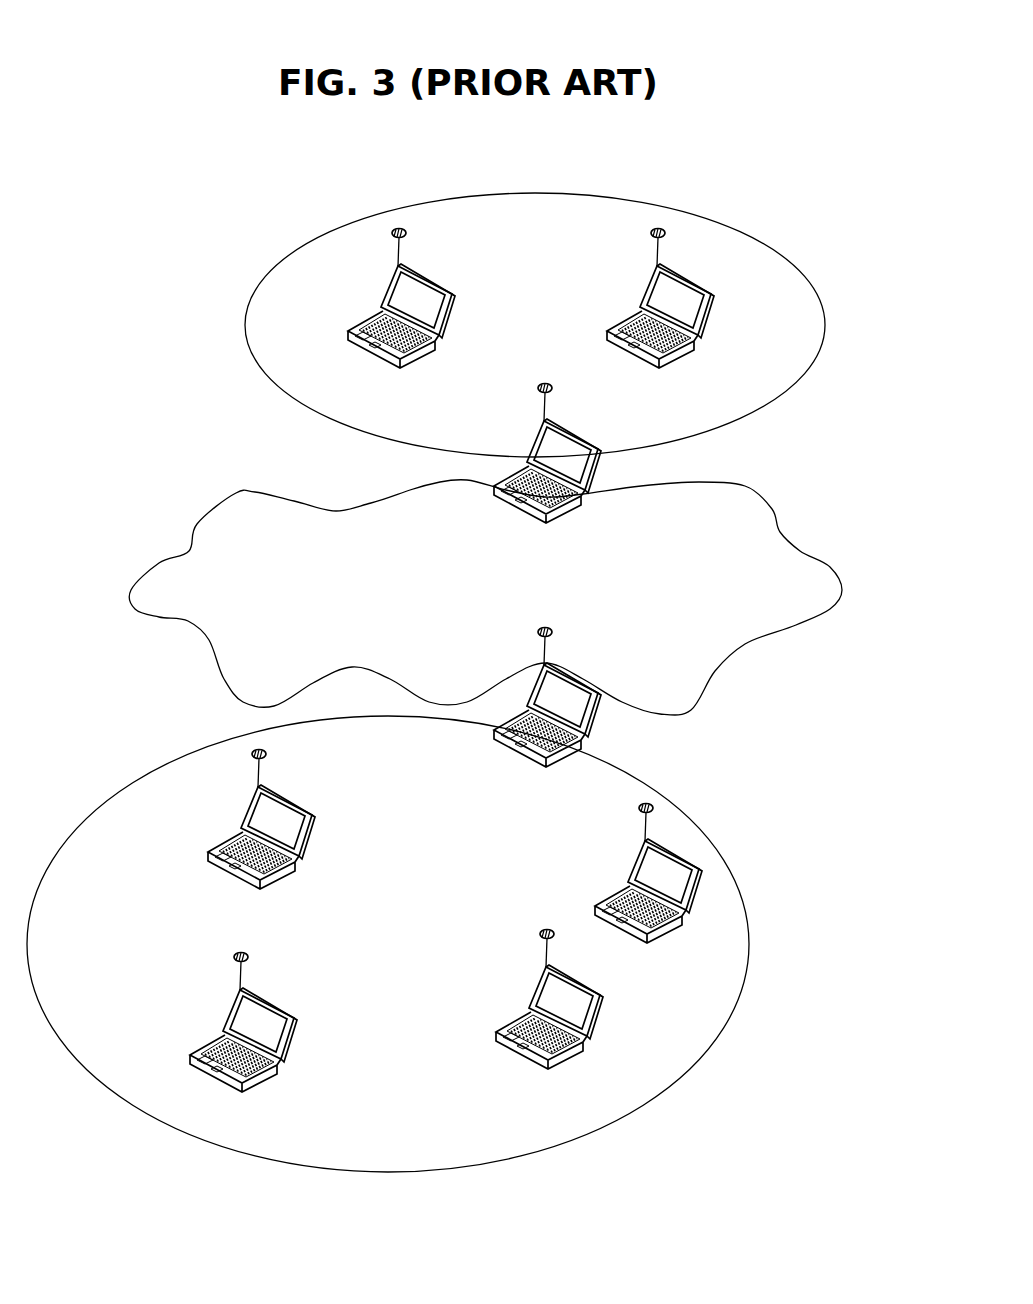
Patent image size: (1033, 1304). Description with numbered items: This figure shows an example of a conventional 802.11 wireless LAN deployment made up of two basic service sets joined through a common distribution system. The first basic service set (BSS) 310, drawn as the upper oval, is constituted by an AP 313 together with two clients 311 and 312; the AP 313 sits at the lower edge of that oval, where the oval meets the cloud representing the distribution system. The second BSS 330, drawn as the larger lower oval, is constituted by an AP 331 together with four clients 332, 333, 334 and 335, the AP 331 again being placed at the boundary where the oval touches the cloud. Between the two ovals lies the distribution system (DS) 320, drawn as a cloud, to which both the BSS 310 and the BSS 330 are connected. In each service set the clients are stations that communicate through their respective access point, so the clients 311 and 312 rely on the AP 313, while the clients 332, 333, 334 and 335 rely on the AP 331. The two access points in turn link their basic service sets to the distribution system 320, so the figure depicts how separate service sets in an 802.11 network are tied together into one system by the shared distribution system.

The basic service set 310 is at (825, 325).
The client 311 is at (403, 319).
The client 312 is at (663, 319).
The AP 313 is at (572, 476).
The distribution system 320 is at (776, 522).
The BSS 330 is at (750, 942).
The AP 331 is at (571, 716).
The client 332 is at (264, 840).
The client 333 is at (247, 1043).
The client 334 is at (650, 894).
The client 335 is at (551, 1020).